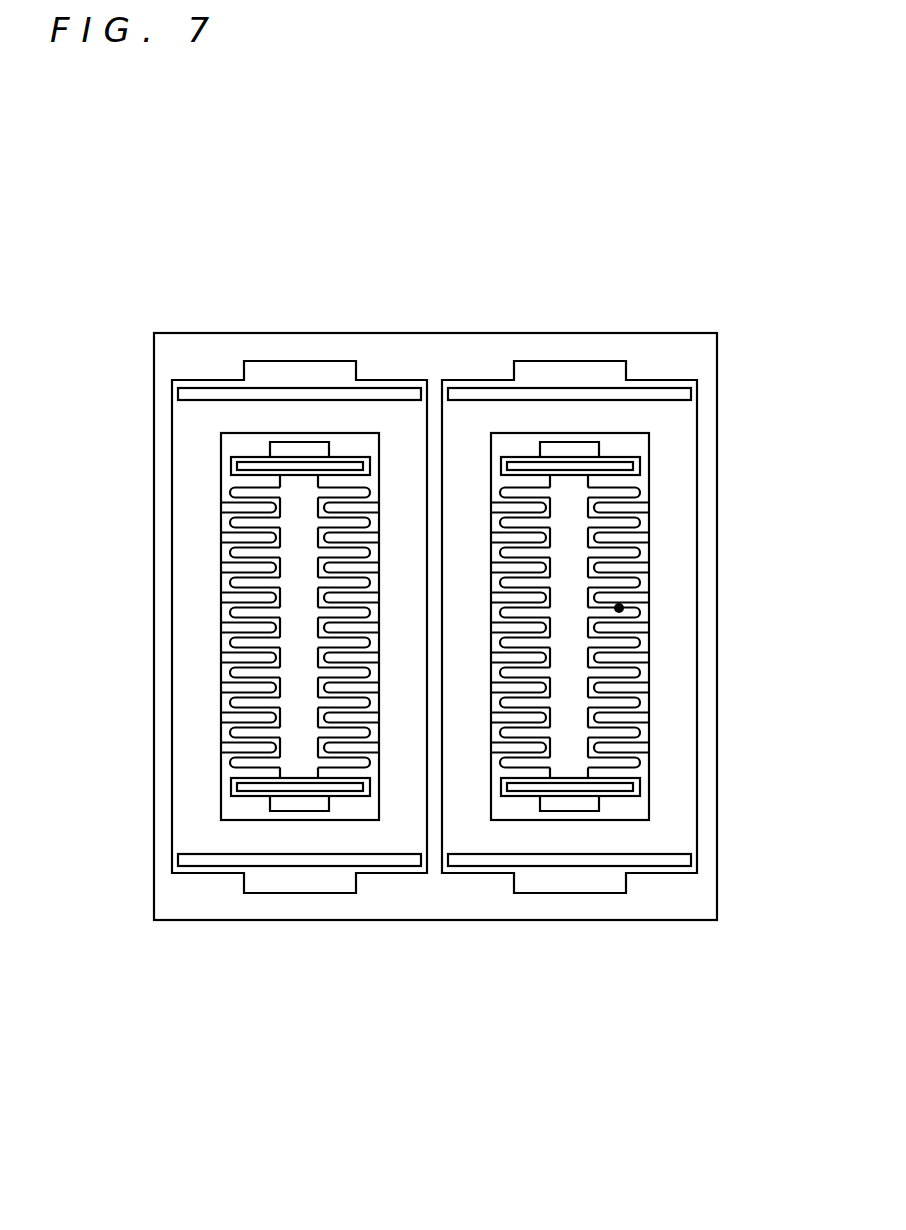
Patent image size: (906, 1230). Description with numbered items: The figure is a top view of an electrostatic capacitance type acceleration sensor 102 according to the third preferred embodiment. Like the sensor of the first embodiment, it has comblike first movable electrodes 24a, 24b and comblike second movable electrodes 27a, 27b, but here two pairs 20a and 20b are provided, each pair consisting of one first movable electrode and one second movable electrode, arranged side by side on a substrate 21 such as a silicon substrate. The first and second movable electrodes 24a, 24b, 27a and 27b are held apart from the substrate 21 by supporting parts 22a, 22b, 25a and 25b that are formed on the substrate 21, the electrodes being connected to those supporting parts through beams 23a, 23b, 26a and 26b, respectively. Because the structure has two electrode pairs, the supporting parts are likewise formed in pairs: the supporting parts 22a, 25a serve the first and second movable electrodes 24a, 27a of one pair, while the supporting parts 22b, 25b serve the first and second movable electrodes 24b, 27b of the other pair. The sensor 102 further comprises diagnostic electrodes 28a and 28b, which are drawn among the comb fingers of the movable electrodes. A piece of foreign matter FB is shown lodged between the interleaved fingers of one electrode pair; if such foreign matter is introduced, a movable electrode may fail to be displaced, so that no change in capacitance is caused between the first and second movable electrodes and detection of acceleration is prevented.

The electrostatic capacitance type acceleration sensor 102 is at (441, 216).
The substrate 21 is at (181, 352).
The pair of first and second movable electrodes 20a is at (428, 968).
The pair of first and second movable electrodes 20b is at (428, 968).
The supporting part 22a is at (292, 370).
The supporting part 22b is at (569, 621).
The beam 23a is at (213, 383).
The beam 23b is at (616, 628).
The first movable electrode 24a is at (187, 570).
The first movable electrode 24b is at (623, 621).
The supporting part 25a is at (300, 452).
The supporting part 25b is at (662, 623).
The beam 26a is at (250, 458).
The beam 26b is at (643, 621).
The second movable electrode 27a is at (300, 660).
The second movable electrode 27b is at (667, 626).
The diagnostic electrode 28a is at (349, 492).
The diagnostic electrode 28b is at (623, 621).
The foreign matter FB is at (692, 605).